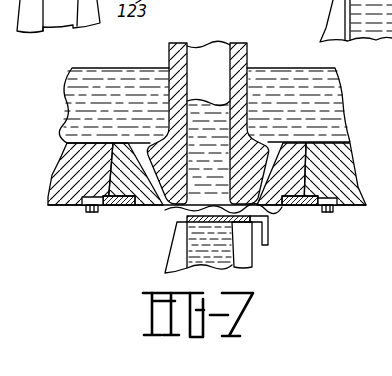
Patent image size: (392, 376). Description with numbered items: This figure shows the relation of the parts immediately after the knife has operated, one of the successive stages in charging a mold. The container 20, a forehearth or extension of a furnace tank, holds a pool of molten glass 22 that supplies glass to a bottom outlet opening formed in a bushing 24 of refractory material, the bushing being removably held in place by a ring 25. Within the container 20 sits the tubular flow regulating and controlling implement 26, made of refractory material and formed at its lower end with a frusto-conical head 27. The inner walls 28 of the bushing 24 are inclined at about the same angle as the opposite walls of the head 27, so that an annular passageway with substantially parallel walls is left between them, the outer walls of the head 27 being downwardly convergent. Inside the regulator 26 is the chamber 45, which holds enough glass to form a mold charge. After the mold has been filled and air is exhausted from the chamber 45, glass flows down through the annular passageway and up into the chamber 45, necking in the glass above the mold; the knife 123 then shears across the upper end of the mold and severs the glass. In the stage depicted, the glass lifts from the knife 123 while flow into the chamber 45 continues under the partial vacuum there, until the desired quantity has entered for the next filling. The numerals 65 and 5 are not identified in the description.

The chamber 45 is at (213, 113).
The flow regulating and controlling implement 26 is at (242, 60).
The pool of molten glass 22 is at (207, 145).
The ring 25 is at (82, 200).
The bushing 24 is at (140, 205).
The inner walls 28 is at (157, 192).
The frusto-conical head 27 is at (170, 199).
The hanger 65 is at (177, 245).
The knife 123 is at (258, 219).
The pedestal 5 is at (22, 18).
The container 20 is at (339, 21).